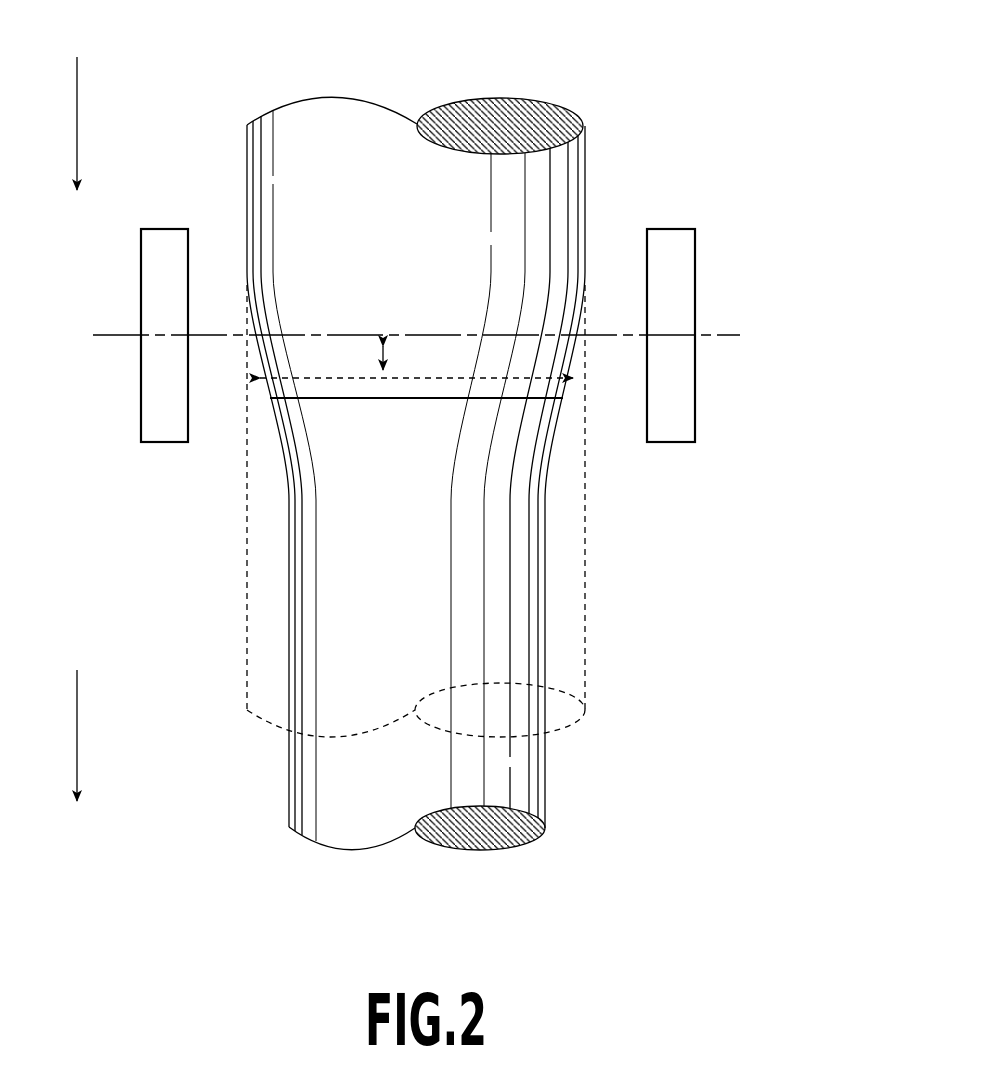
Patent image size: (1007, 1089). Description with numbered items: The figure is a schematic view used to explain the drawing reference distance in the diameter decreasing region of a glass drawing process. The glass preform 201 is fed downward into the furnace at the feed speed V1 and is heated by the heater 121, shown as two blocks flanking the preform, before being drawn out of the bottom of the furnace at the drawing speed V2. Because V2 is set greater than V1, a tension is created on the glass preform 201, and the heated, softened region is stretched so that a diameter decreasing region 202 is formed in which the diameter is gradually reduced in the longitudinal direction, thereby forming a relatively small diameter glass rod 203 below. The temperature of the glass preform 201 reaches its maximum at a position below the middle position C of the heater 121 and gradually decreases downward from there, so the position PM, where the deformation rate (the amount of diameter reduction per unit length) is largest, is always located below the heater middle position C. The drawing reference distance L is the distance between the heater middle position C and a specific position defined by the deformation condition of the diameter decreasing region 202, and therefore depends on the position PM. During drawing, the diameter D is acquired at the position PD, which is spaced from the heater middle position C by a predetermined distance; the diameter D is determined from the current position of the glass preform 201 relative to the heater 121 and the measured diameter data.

The glass preform 201 is at (563, 167).
The diameter decreasing region 202 is at (337, 441).
The glass rod 203 is at (528, 773).
The heater 121 is at (682, 393).
The heater middle position C is at (725, 335).
The position where deformation rate is largest PM is at (402, 398).
The diameter D is at (430, 377).
The drawing reference distance L is at (388, 352).
The diameter acquisition position PD is at (310, 378).
The feed speed V1 is at (76, 107).
The drawing speed V2 is at (76, 718).